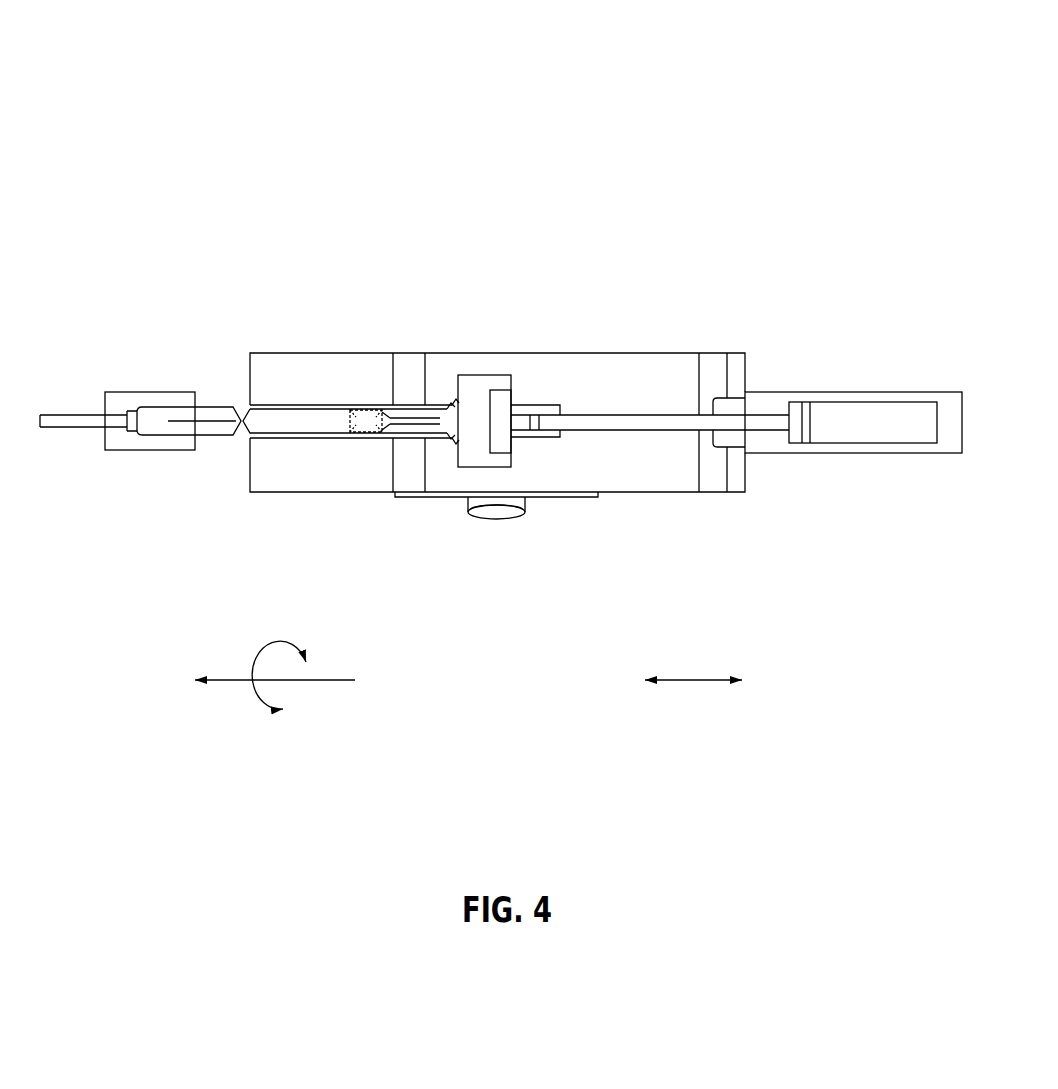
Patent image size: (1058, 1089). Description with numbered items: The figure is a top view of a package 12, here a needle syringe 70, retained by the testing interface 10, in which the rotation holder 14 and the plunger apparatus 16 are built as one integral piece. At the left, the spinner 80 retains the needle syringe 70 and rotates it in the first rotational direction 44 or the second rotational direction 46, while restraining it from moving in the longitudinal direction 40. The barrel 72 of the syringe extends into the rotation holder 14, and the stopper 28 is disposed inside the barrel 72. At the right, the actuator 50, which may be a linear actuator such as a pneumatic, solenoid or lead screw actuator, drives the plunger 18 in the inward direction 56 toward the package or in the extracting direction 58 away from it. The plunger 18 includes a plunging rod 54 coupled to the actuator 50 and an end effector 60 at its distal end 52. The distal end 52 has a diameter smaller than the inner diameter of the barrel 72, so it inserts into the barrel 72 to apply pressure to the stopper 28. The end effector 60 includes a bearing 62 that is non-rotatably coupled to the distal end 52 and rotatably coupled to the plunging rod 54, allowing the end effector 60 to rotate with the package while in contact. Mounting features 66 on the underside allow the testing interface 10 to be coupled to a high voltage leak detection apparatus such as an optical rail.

The testing interface 10 is at (212, 97).
The package 12 is at (265, 360).
The rotation holder 14 is at (268, 325).
The plunger apparatus 16 is at (722, 308).
The plunger 18 is at (492, 372).
The stopper 28 is at (362, 442).
The longitudinal direction 40 is at (300, 681).
The first rotational direction 44 is at (298, 687).
The second rotational direction 46 is at (298, 687).
The actuator 50 is at (847, 385).
The distal end 52 is at (398, 415).
The plunging rod 54 is at (638, 440).
The inward direction 56 is at (695, 679).
The extracting direction 58 is at (695, 679).
The end effector 60 is at (440, 465).
The bearing 62 is at (512, 467).
The mounting features 66 is at (490, 527).
The needle syringe 70 is at (333, 397).
The barrel 72 is at (305, 442).
The spinner 80 is at (112, 377).